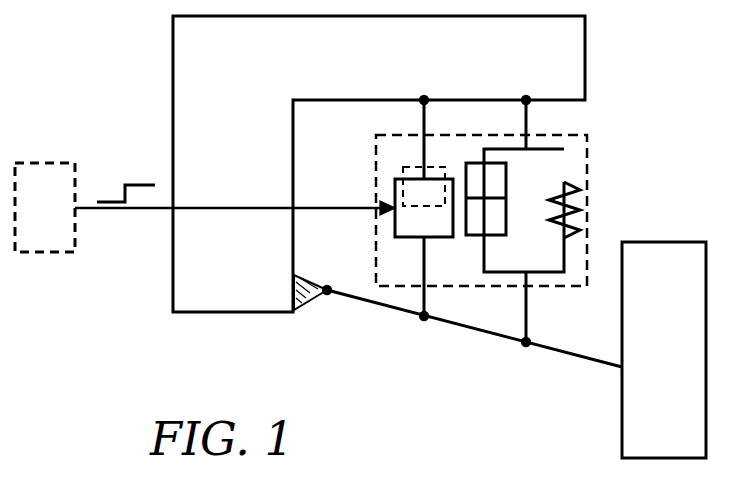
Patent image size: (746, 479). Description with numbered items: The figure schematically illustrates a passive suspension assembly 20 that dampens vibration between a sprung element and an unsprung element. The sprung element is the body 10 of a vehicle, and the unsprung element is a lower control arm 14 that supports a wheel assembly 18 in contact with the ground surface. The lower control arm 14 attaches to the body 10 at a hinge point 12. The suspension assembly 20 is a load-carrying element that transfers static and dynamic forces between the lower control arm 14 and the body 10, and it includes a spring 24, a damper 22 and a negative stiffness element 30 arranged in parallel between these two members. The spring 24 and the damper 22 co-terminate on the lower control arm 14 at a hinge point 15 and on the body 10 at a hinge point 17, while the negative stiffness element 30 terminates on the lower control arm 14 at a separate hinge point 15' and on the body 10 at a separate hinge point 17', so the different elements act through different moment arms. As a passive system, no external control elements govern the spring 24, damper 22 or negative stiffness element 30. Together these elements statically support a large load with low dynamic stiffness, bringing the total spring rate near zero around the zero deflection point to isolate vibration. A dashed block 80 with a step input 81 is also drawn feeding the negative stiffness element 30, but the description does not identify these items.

The body 10 is at (218, 59).
The hinge point 12 is at (327, 294).
The lower control arm 14 is at (577, 357).
The hinge point 15 is at (510, 362).
The hinge point 15' is at (448, 331).
The hinge point 17 is at (522, 88).
The hinge point 17' is at (424, 103).
The wheel assembly 18 is at (680, 364).
The passive suspension assembly 20 is at (565, 136).
The damper 22 is at (506, 175).
The spring 24 is at (580, 207).
The negative stiffness element 30 is at (395, 192).
The signal source 80 is at (58, 222).
The step signal 81 is at (140, 179).